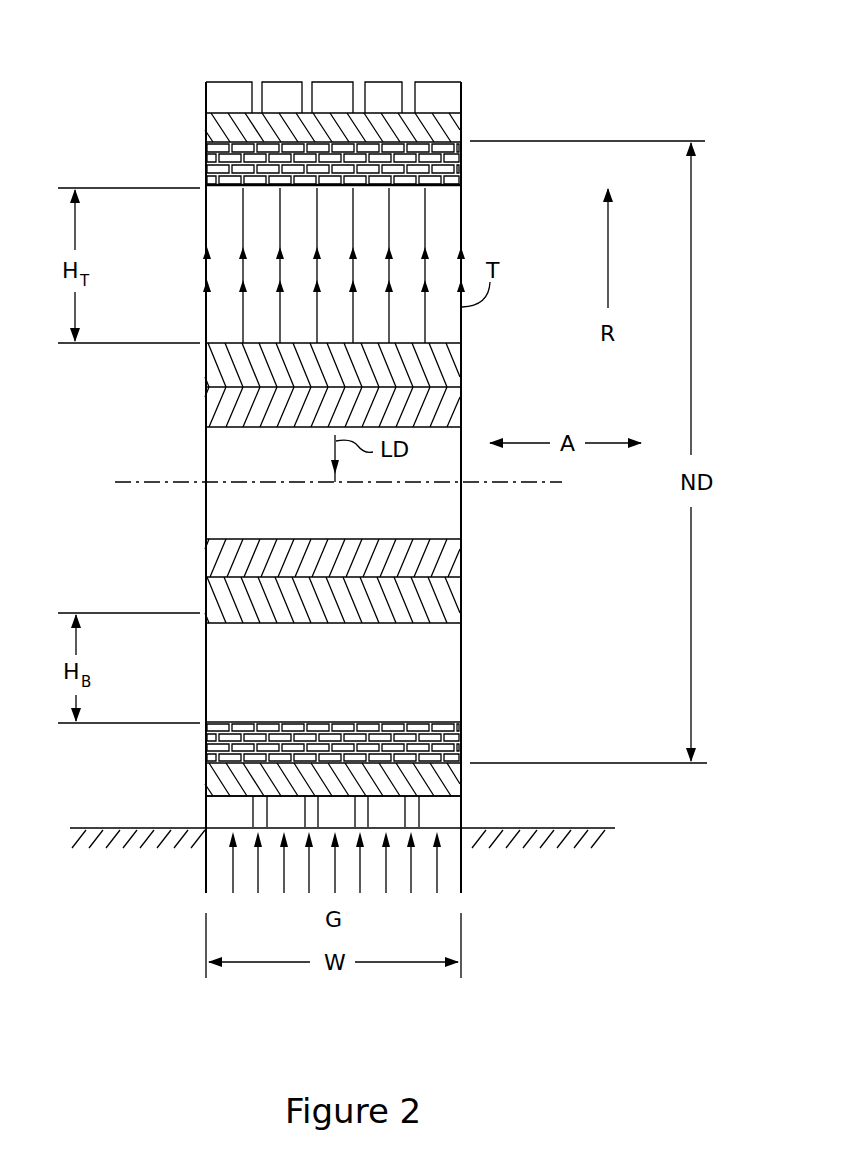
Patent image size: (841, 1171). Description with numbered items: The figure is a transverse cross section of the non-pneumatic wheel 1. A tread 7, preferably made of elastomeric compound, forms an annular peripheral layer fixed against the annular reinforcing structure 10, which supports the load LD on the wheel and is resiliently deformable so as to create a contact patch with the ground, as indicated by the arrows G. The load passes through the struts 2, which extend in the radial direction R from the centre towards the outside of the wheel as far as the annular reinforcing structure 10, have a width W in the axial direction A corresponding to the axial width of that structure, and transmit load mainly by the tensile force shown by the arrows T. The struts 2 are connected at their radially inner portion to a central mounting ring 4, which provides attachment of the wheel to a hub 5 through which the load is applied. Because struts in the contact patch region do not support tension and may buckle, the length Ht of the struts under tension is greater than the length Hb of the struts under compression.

The non-pneumatic wheel 1 is at (117, 63).
The struts 2 is at (178, 262).
The central mounting ring 4 is at (462, 360).
The hub 5 is at (462, 411).
The tread 7 is at (462, 128).
The annular reinforcing structure 10 is at (186, 145).